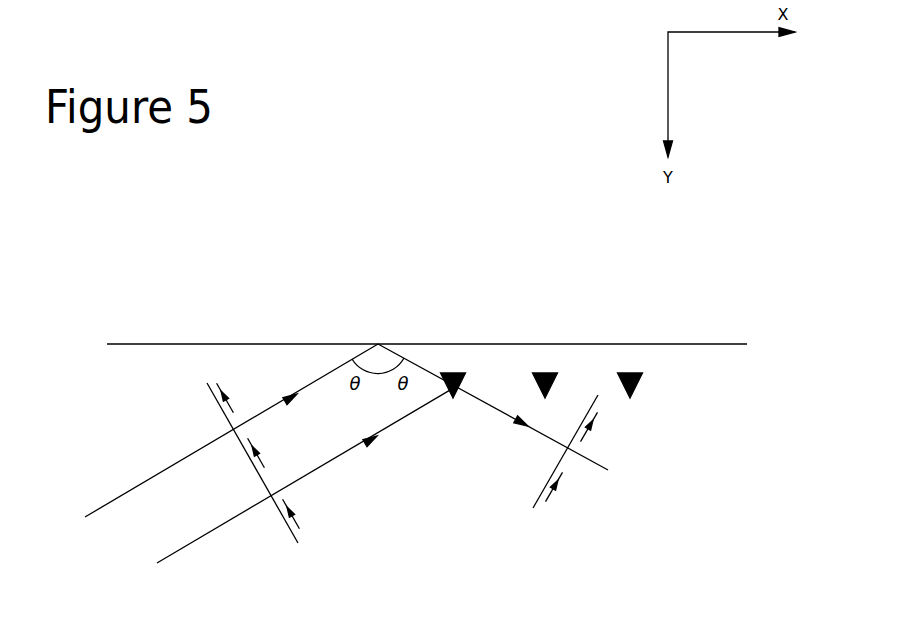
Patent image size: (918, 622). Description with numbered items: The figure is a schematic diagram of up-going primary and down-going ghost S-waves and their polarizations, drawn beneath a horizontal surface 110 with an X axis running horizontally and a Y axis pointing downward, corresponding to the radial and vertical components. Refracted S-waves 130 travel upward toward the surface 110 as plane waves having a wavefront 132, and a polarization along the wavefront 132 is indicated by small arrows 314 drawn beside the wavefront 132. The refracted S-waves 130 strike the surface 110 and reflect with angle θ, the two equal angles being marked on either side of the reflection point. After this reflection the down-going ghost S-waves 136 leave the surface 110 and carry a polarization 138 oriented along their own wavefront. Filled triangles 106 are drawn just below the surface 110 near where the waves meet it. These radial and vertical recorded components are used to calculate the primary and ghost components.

The surface 110 is at (482, 344).
The sensor elements 106 is at (641, 383).
The refracted S-waves 130 is at (135, 485).
The wavefront 132 is at (217, 402).
The polarization direction arrows 314 is at (294, 512).
The ghost S-waves 136 is at (487, 407).
The polarization 138 is at (563, 477).